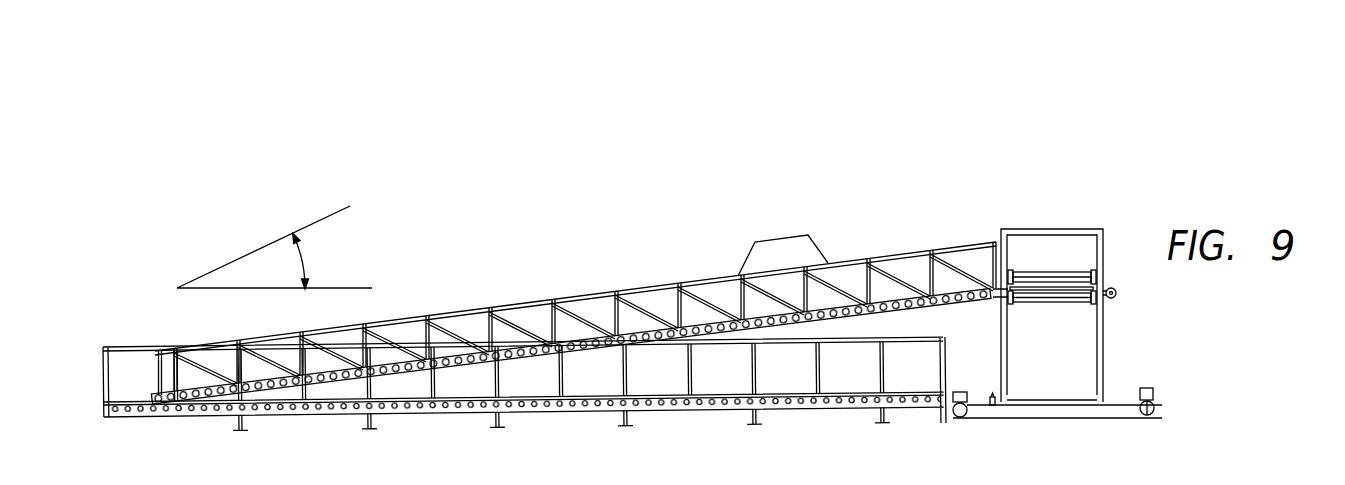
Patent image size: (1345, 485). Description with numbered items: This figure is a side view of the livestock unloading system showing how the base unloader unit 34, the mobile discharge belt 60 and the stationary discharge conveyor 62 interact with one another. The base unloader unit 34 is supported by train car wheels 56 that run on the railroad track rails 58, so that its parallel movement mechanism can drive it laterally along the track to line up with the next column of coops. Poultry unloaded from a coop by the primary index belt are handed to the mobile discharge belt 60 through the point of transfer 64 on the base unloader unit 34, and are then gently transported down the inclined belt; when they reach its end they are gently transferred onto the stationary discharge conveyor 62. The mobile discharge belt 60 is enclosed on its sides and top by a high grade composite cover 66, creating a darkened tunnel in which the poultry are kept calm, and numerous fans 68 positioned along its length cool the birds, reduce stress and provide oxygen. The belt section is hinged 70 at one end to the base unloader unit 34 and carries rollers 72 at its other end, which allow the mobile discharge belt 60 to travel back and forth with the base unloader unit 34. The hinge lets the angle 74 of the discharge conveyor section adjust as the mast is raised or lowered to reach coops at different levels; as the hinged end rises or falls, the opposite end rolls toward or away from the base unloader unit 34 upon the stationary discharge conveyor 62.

The base unloader unit 34 is at (1112, 225).
The train car wheels 56 is at (1155, 404).
The railroad track rails 58 is at (1080, 420).
The mobile discharge belt 60 is at (906, 298).
The stationary discharge conveyor 62 is at (453, 389).
The point of transfer 64 is at (1042, 270).
The composite cover 66 is at (620, 288).
The fans 68 is at (776, 234).
The hinge 70 is at (990, 298).
The rollers 72 is at (153, 401).
The angle 74 is at (274, 247).